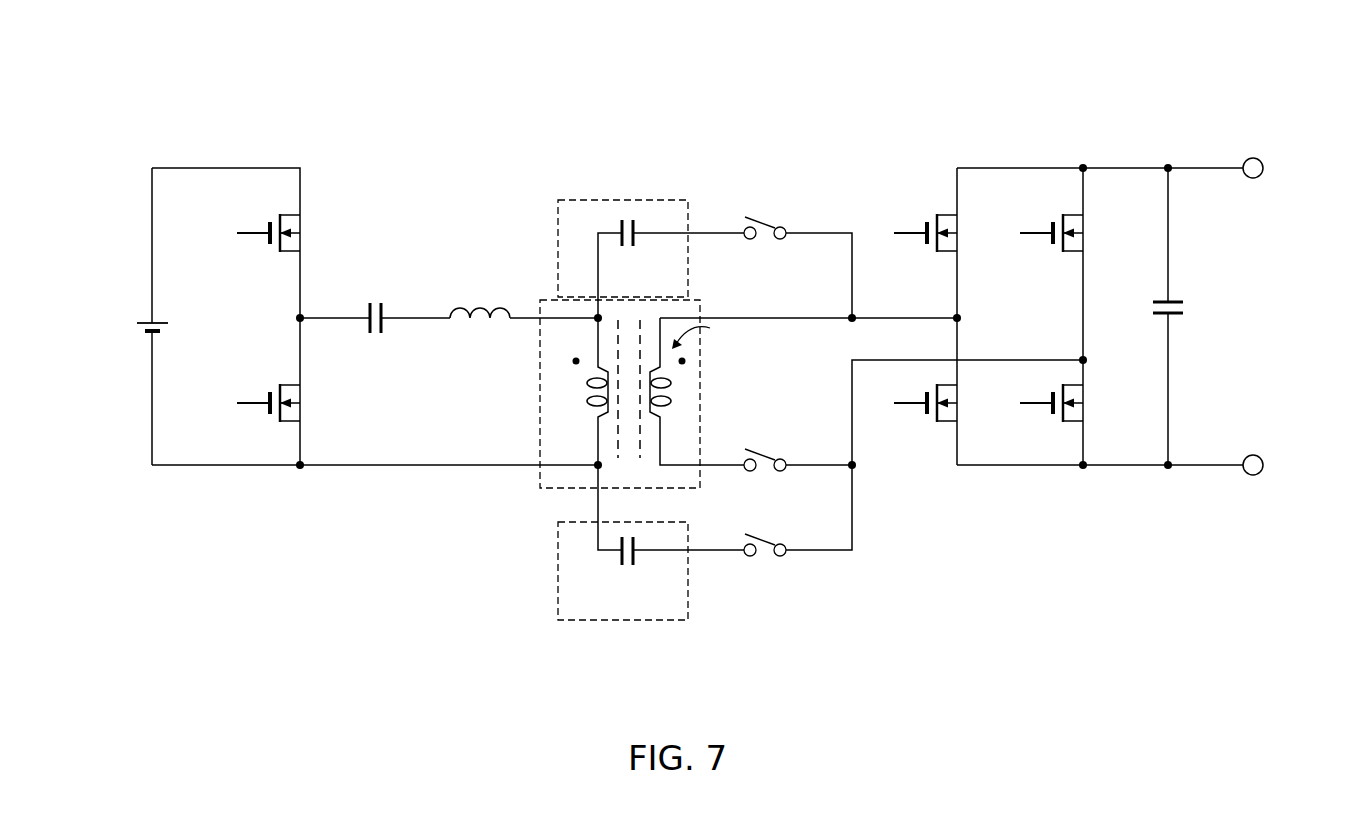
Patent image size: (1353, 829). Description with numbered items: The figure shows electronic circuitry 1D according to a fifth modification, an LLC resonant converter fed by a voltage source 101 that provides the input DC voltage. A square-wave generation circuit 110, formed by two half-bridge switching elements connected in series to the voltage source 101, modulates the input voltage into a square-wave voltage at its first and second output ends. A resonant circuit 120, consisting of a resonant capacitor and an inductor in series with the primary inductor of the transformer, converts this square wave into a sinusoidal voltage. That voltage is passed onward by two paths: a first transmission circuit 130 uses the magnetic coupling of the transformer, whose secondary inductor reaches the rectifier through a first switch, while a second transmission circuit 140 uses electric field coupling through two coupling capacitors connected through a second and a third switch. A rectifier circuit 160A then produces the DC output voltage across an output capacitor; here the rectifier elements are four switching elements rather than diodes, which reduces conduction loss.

The electronic circuitry 1D is at (156, 75).
The voltage source 101 is at (145, 316).
The square-wave generation circuit 110 is at (338, 140).
The resonant circuit 120 is at (558, 140).
The first transmission circuit 130 is at (539, 407).
The second transmission circuit 140 is at (557, 217).
The rectifier circuit 160A is at (1220, 140).